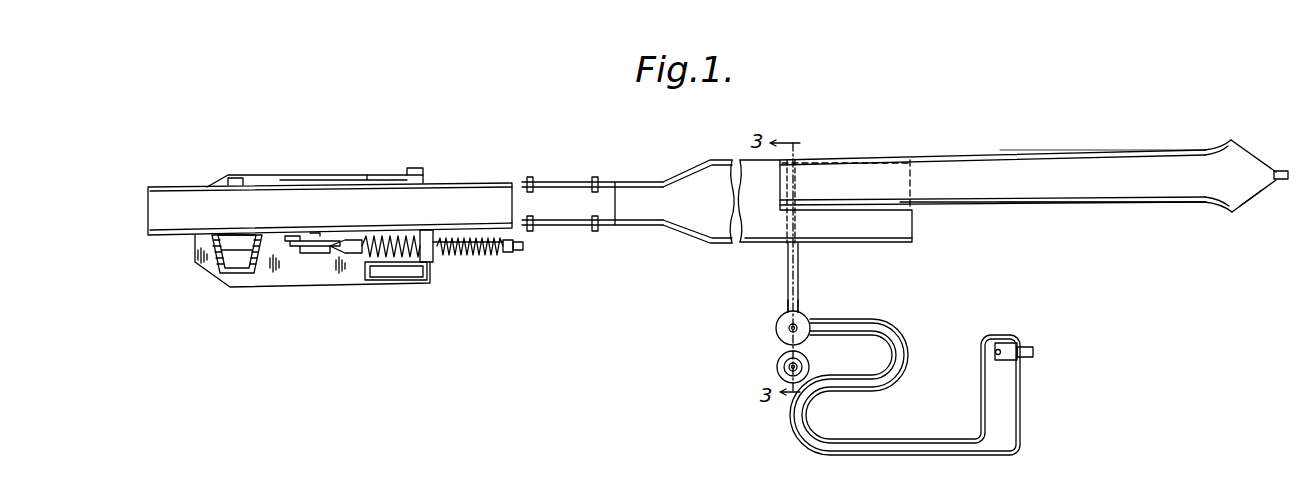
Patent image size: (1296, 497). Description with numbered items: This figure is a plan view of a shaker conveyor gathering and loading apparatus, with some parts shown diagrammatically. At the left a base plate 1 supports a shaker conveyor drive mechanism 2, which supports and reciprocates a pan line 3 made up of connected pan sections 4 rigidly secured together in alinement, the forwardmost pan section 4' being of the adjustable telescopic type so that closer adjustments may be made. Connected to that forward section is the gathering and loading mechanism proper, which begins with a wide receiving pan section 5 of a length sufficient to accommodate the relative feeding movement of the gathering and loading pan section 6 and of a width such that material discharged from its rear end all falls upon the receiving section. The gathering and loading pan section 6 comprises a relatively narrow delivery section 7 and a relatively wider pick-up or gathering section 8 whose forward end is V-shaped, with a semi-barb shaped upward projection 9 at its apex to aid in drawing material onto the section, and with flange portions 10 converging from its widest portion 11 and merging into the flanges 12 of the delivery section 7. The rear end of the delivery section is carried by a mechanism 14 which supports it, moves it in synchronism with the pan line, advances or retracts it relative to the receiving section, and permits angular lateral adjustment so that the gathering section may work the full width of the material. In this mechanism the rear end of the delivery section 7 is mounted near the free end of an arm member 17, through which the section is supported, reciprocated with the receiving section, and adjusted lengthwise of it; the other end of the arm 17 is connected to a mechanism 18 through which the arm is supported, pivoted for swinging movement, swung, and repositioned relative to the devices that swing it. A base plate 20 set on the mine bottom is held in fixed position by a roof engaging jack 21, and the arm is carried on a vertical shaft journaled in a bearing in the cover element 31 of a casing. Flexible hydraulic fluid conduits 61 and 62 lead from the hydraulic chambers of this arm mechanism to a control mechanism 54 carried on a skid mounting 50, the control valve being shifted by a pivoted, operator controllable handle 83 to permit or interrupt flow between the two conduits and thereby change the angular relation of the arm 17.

The base plate 1 is at (316, 284).
The shaker conveyor drive mechanism 2 is at (430, 262).
The pan line 3 is at (484, 182).
The pan sections 4 is at (329, 166).
The forwardmost pan section 4' is at (628, 209).
The receiving pan section 5 is at (864, 243).
The gathering and loading pan section 6 is at (931, 149).
The delivery section 7 is at (1011, 195).
The pick-up or gathering section 8 is at (1247, 190).
The semi-barb shaped upward projection 9 is at (1281, 170).
The flange portions 10 is at (1213, 149).
The widest portion 11 is at (1231, 141).
The flanges 12 is at (1052, 155).
The mechanism 14 is at (783, 365).
The arm member 17 is at (786, 283).
The mechanism 18 is at (808, 316).
The base plate 20 is at (805, 364).
The roof engaging jack 21 is at (785, 370).
The cover element 31 is at (776, 328).
The skid mounting 50 is at (1034, 352).
The control mechanism 54 is at (1020, 344).
The flexible hydraulic fluid conduit 61 is at (900, 342).
The flexible hydraulic fluid conduit 62 is at (846, 338).
The operator controllable handle 83 is at (998, 355).